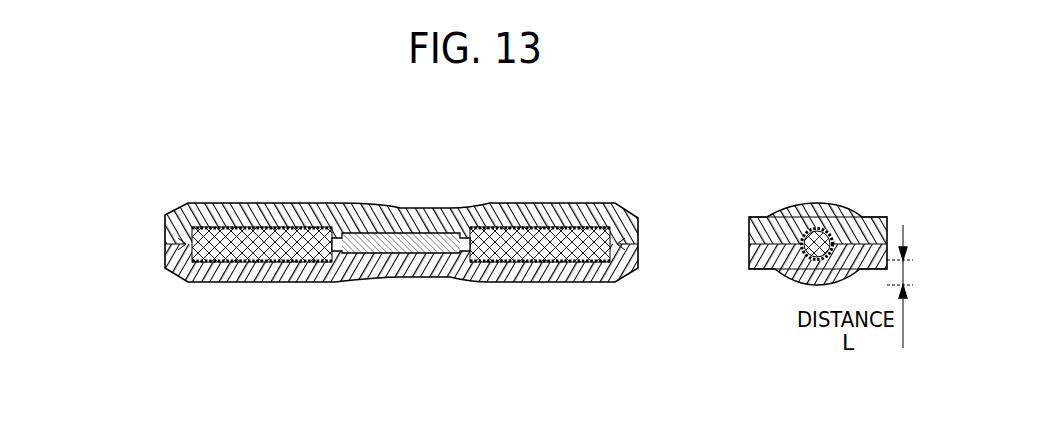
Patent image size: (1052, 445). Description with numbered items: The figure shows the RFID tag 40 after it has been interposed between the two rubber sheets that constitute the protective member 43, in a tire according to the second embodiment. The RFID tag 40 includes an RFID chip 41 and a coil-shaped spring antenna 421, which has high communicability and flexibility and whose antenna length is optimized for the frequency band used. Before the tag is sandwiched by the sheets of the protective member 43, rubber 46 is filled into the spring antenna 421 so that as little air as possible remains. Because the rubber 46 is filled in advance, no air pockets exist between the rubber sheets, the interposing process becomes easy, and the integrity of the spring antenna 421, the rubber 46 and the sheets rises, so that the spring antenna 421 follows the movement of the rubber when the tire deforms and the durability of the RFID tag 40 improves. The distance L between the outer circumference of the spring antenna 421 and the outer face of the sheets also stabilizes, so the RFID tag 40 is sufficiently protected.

The RFID tag 40 is at (335, 227).
The RFID chip 41 is at (416, 240).
The spring antenna 421 is at (322, 226).
The protective member 43 is at (335, 255).
The rubber 46 is at (237, 250).